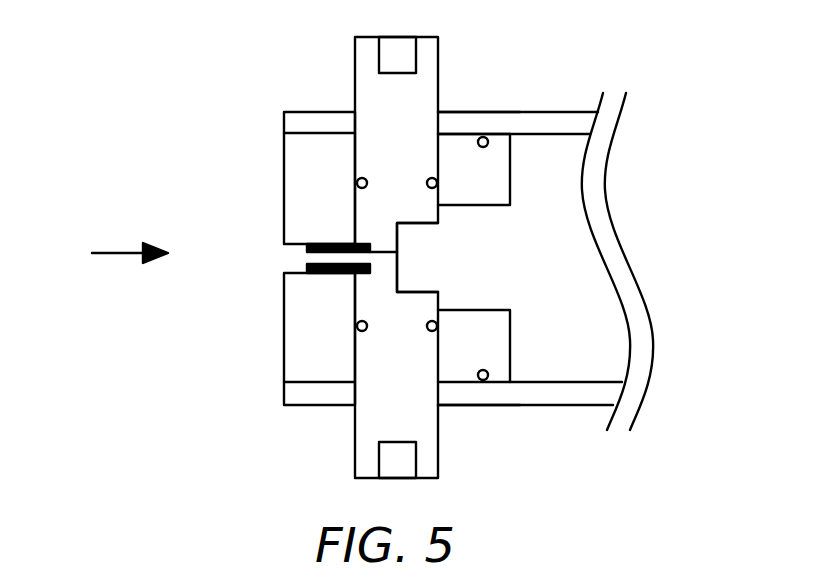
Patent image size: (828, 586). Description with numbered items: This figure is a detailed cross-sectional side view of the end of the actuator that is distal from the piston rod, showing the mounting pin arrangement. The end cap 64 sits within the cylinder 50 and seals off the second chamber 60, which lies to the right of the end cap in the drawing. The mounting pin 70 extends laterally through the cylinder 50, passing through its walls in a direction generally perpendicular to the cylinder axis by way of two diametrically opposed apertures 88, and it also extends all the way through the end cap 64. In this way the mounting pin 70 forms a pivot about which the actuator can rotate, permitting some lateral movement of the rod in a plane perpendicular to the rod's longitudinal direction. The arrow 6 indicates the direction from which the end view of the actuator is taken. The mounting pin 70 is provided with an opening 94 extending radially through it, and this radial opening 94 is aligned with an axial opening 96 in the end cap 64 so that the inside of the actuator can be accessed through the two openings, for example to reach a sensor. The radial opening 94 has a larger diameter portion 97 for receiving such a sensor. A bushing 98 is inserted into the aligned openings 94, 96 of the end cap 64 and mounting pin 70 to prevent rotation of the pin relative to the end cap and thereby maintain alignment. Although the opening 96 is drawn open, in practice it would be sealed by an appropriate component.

The arrow 6 is at (117, 253).
The cylinder 50 is at (545, 120).
The second chamber 60 is at (592, 290).
The end cap 64 is at (300, 183).
The mounting pin 70 is at (370, 80).
The apertures 88 is at (445, 118).
The opening 94 is at (384, 264).
The axial opening 96 is at (306, 272).
The larger diameter portion 97 is at (425, 223).
The bushing 98 is at (306, 251).